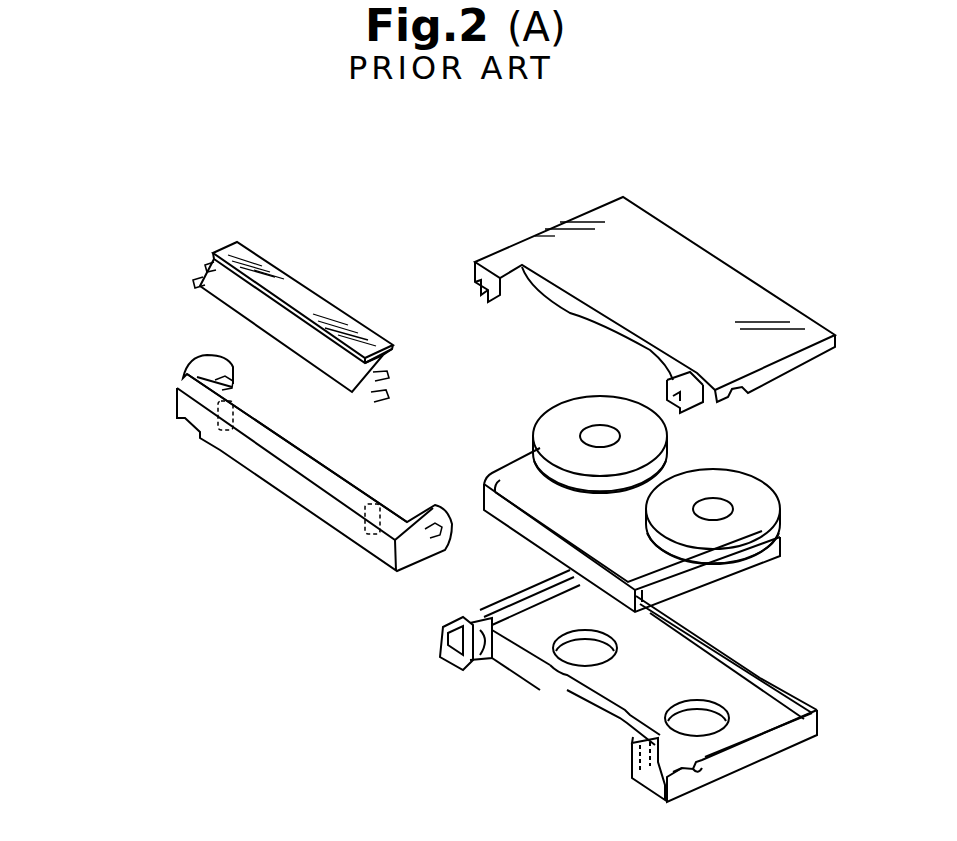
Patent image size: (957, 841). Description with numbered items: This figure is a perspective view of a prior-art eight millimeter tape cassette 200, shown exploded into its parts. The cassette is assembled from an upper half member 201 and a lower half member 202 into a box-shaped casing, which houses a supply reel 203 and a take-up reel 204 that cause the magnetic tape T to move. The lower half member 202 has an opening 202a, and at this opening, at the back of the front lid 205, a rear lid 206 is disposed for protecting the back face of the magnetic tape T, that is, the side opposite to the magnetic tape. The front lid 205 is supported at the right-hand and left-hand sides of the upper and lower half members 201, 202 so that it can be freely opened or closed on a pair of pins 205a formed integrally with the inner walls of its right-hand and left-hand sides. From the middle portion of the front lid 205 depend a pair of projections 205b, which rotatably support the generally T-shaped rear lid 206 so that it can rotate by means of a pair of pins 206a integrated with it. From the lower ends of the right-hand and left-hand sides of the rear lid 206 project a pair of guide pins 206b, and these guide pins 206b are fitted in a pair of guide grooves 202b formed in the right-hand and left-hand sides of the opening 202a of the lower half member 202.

The 8 mm tape cassette 200 is at (340, 168).
The upper half member 201 is at (735, 292).
The lower half member 202 is at (832, 633).
The opening 202a is at (570, 710).
The guide grooves 202b is at (483, 662).
The supply reel 203 is at (752, 492).
The take-up reel 204 is at (577, 412).
The front lid 205 is at (282, 477).
The pins 205a is at (234, 369).
The projections 205b is at (233, 428).
The rear lid 206 is at (318, 294).
The pins 206a is at (206, 265).
The guide pins 206b is at (194, 282).
The magnetic tape T is at (510, 470).